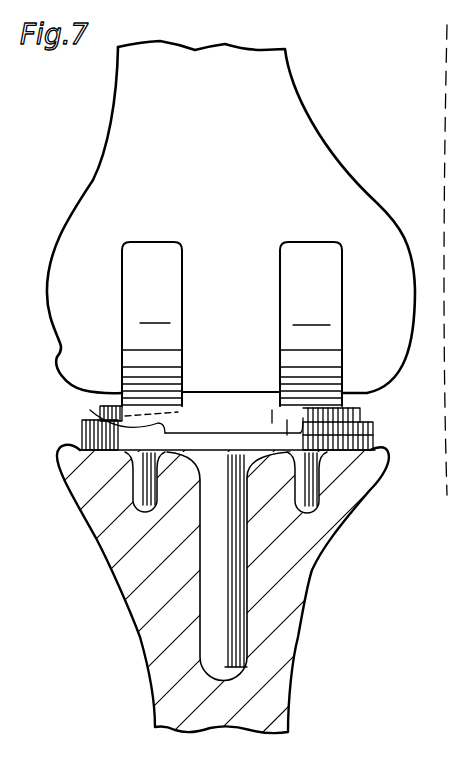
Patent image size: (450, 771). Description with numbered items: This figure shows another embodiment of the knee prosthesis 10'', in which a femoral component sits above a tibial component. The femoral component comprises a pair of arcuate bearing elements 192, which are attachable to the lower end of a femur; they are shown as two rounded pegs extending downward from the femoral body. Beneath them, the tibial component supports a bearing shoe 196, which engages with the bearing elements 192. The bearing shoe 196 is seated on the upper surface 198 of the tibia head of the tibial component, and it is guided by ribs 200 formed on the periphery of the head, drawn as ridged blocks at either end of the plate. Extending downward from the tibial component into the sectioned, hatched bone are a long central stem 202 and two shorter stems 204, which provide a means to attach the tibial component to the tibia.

The prosthesis 10'' is at (231, 217).
The arcuate bearing elements 192 is at (307, 330).
The bearing shoe 196 is at (210, 422).
The upper surface 198 is at (250, 437).
The ribs 200 is at (103, 420).
The stem 202 is at (225, 638).
The stems 204 is at (143, 478).